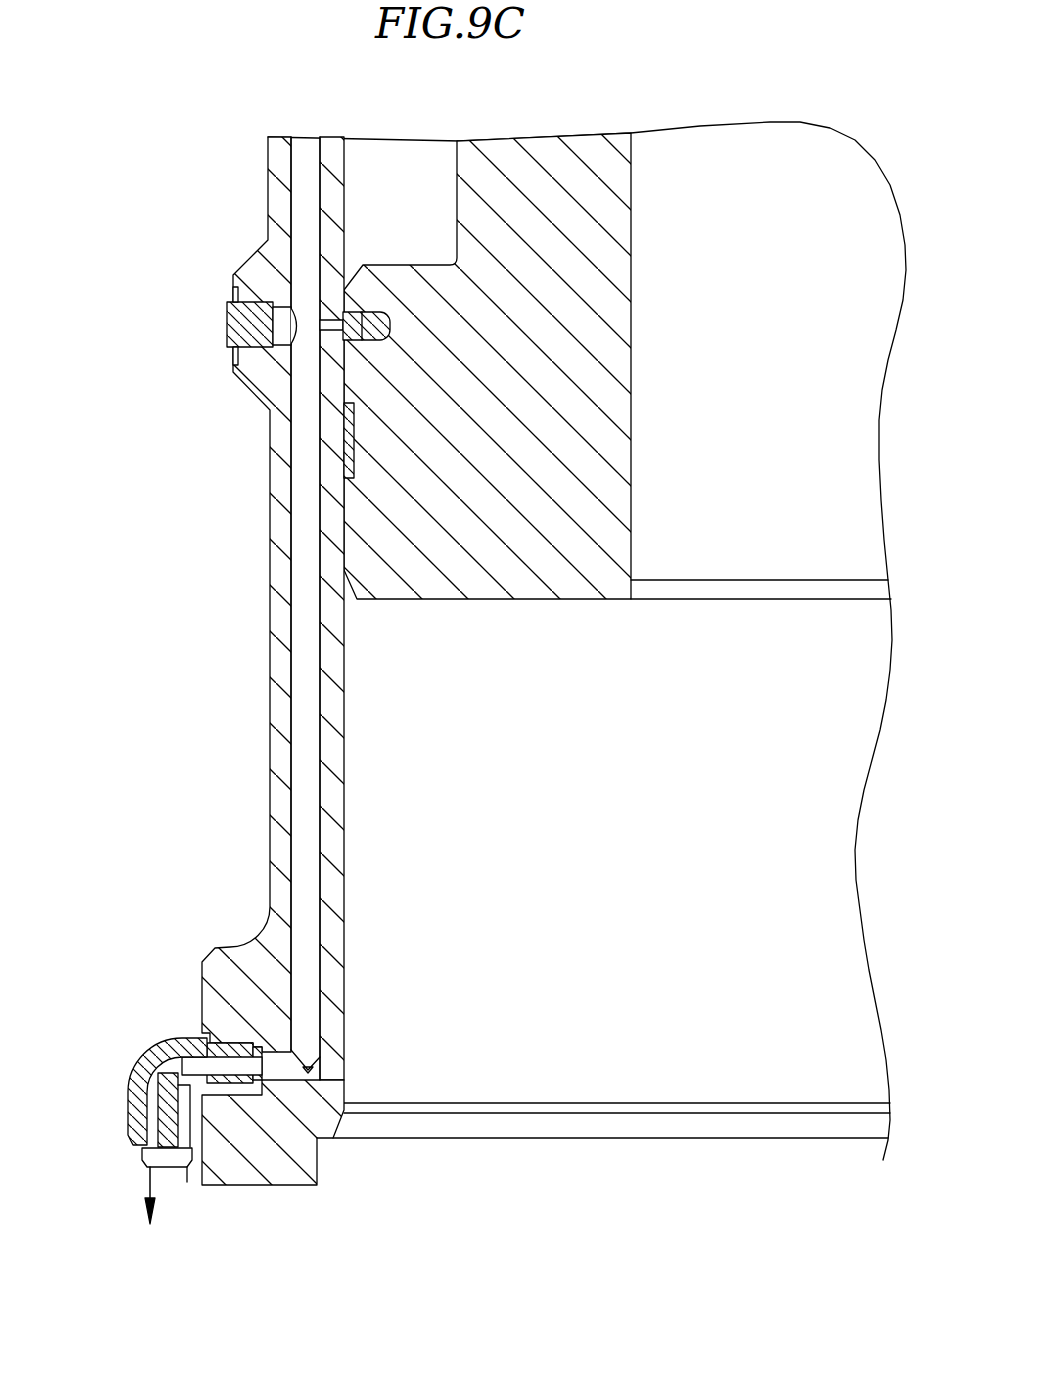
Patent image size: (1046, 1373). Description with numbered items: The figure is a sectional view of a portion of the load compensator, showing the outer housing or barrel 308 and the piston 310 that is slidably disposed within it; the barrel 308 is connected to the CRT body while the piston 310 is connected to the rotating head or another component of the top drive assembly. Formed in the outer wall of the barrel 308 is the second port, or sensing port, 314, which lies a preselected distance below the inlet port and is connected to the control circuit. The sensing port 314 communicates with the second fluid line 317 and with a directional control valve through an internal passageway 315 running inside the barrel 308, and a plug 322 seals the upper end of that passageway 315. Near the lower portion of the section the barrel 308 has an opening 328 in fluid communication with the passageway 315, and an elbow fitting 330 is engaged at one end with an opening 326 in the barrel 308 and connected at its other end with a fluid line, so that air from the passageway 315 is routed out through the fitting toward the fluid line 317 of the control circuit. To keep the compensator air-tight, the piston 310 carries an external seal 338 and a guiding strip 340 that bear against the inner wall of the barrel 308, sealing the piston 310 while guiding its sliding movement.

The barrel 308 is at (270, 598).
The piston 310 is at (527, 598).
The second port 314 is at (350, 320).
The internal passageway 315 is at (291, 670).
The second fluid line 317 is at (151, 1230).
The plug 322 is at (228, 320).
The opening 326 is at (190, 1195).
The opening 328 is at (248, 1047).
The elbow fitting 330 is at (167, 1045).
The external seal 338 is at (332, 325).
The guiding strip 340 is at (352, 440).